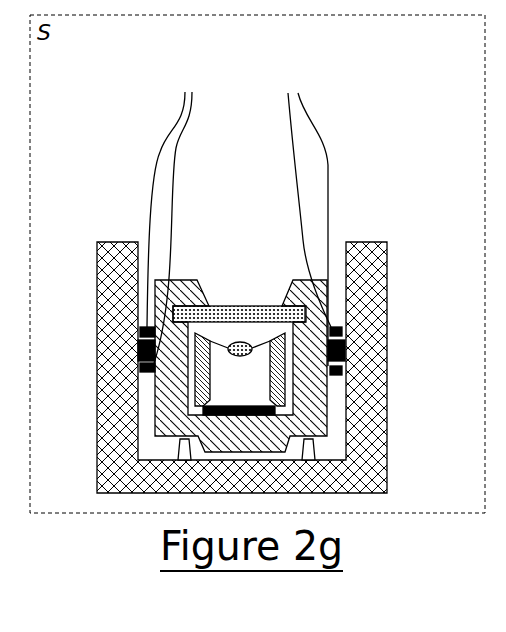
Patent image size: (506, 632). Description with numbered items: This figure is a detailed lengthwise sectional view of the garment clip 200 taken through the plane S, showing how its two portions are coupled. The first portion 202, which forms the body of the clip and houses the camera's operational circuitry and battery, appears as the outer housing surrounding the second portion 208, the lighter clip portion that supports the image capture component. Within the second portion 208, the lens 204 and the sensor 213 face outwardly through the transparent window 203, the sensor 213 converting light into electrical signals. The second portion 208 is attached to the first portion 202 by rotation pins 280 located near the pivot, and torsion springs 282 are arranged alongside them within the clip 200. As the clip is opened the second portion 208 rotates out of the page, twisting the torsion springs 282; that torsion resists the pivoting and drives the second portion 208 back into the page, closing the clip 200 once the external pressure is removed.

The garment clip 200 is at (132, 220).
The first portion 202 is at (367, 242).
The transparent window 203 is at (280, 298).
The lens 204 is at (237, 357).
The second portion 208 is at (199, 280).
The sensor 213 is at (217, 405).
The rotation pins 280 is at (138, 349).
The torsion springs 282 is at (239, 217).